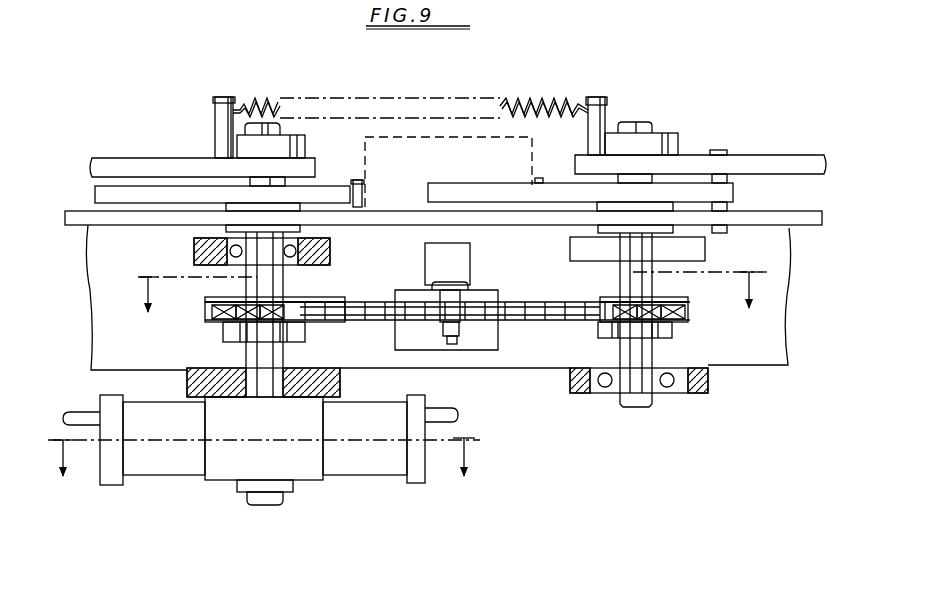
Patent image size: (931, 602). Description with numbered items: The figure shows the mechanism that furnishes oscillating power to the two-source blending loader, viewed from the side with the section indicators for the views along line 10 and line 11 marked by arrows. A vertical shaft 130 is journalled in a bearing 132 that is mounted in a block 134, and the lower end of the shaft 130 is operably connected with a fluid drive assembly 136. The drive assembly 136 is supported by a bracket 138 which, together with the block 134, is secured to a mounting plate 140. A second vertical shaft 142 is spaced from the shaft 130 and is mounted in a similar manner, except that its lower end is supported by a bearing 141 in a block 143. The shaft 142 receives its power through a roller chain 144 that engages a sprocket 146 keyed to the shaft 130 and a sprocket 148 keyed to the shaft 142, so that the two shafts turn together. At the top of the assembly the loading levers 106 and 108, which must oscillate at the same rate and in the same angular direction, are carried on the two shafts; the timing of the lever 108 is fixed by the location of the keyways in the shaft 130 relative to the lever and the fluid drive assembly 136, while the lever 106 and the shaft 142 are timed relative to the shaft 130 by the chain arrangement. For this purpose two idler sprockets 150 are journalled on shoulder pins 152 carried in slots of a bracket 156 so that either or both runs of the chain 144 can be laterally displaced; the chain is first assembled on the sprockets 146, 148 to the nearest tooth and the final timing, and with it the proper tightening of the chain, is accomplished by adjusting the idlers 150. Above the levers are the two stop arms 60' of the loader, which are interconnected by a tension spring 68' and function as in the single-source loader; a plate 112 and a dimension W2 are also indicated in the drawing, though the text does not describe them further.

The tension spring 68' is at (413, 89).
The stop arms 60' is at (458, 144).
The lever 108 is at (100, 195).
The width dimension W2 is at (532, 158).
The lever 106 is at (470, 186).
The base plate 112 is at (775, 207).
The block 134 is at (327, 257).
The bearing 132 is at (293, 265).
The bracket 156 is at (466, 253).
The shoulder pins 152 is at (468, 280).
The roller chain 144 is at (572, 292).
The view line 10- 10 is at (437, 292).
The mounting plate 140 is at (790, 310).
The sprocket 146 is at (305, 341).
The idler sprockets 150 is at (478, 308).
The sprocket 148 is at (673, 335).
The bracket 138 is at (342, 386).
The block 143 is at (572, 388).
The bearing 141 is at (604, 395).
The second vertical shaft 142 is at (632, 400).
The shaft 130 is at (258, 507).
The fluid drive assembly 136 is at (372, 478).
The view line 11- 11 is at (265, 457).